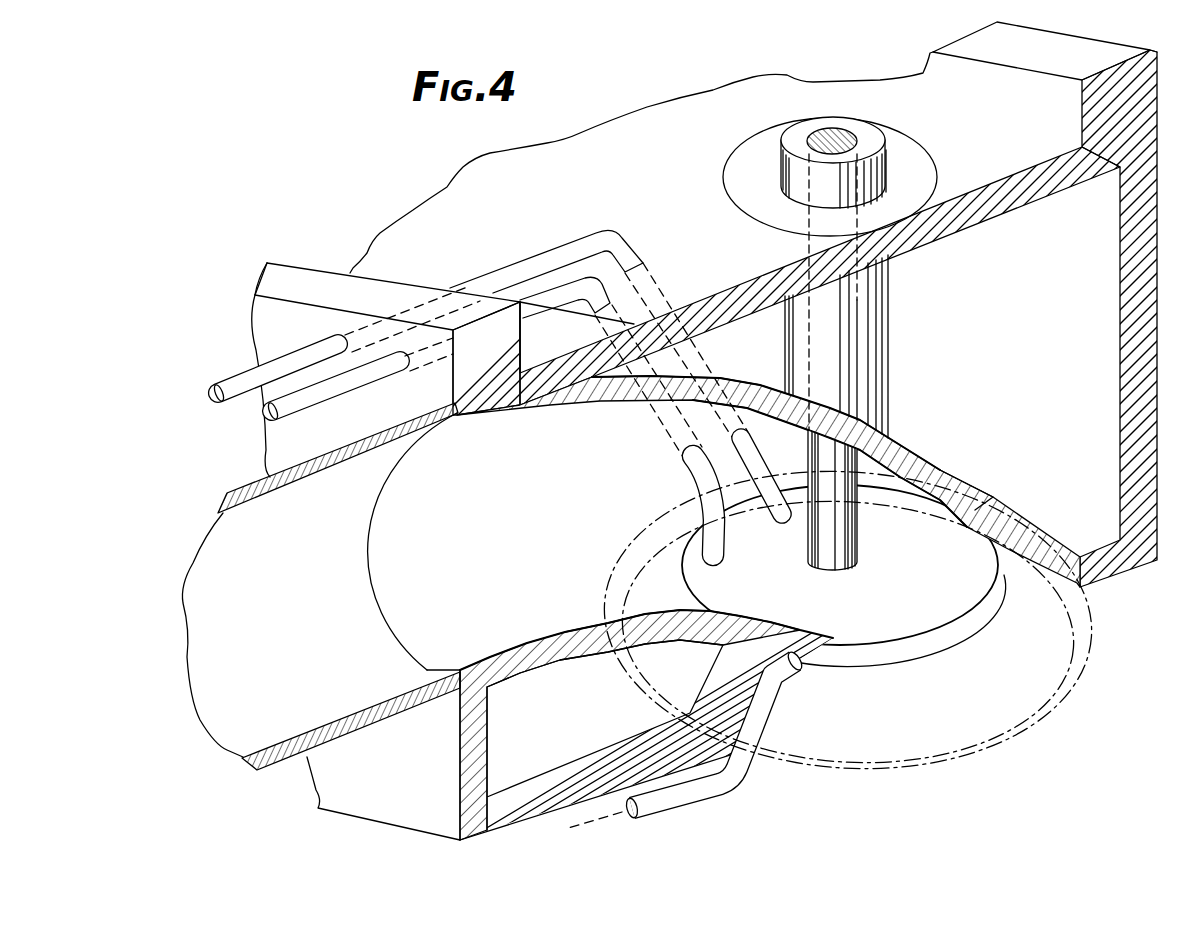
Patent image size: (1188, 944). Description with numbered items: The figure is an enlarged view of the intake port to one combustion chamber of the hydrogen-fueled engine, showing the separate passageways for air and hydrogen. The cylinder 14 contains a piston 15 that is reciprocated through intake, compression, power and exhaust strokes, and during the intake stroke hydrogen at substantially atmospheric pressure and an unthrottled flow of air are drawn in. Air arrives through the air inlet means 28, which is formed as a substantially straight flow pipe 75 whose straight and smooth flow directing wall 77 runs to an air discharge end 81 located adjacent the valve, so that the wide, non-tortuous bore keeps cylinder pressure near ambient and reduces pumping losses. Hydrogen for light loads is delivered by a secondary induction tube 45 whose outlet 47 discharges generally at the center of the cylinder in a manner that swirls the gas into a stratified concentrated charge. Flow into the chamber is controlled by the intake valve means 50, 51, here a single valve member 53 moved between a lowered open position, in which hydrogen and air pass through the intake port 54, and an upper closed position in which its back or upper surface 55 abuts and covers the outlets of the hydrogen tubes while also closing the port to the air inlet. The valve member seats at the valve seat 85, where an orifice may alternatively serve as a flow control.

The cylinder 14 is at (1080, 688).
The piston 15 is at (1047, 718).
The air inlet means 28 is at (176, 553).
The secondary induction tube 45 is at (617, 240).
The outlet 47 is at (782, 522).
The intake valve means 50 is at (907, 339).
The intake valve means 51 is at (876, 503).
The valve member 53 is at (992, 497).
The intake port 54 is at (713, 591).
The back or upper surface 55 is at (887, 427).
The straight flow pipe 75 is at (289, 765).
The flow directing wall 77 is at (327, 593).
The air discharge end 81 is at (604, 548).
The valve seat 85 is at (784, 680).